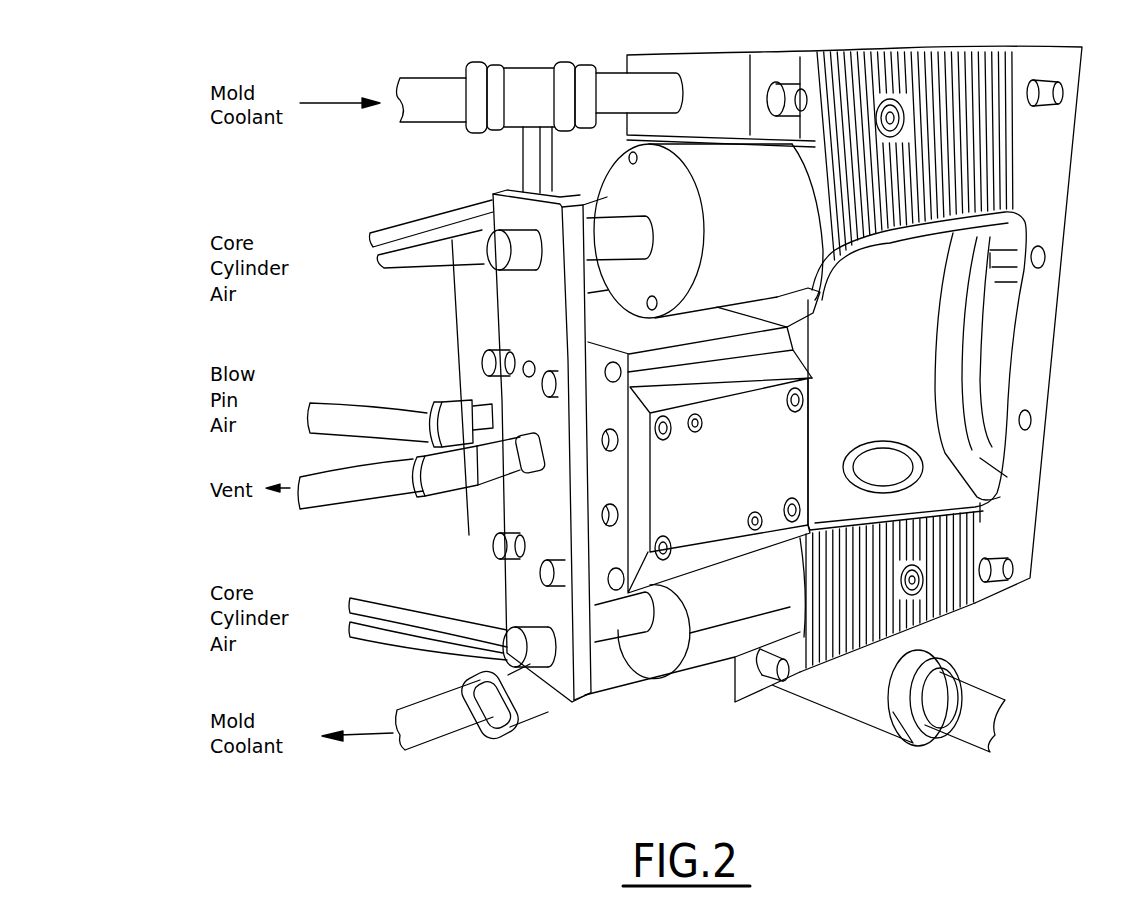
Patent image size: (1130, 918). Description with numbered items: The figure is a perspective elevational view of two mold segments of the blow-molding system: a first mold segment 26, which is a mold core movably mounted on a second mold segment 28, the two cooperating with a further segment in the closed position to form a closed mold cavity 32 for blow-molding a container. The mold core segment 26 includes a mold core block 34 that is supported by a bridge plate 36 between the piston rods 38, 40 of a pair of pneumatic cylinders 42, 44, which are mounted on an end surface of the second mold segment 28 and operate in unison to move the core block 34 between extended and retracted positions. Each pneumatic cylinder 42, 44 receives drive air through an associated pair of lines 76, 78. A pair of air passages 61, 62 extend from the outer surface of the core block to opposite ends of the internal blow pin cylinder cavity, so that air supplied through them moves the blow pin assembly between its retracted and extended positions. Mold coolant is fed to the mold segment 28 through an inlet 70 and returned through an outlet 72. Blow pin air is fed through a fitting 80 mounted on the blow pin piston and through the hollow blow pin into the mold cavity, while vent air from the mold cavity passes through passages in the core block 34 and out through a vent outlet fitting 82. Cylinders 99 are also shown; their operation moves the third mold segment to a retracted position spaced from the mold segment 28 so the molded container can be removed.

The first mold segment 26 is at (822, 375).
The second mold segment 28 is at (782, 45).
The closed mold cavity 32 is at (917, 240).
The mold core block 34 is at (600, 553).
The bridge plate 36 is at (507, 297).
The piston rod 38 is at (493, 255).
The piston rod 40 is at (605, 612).
The pneumatic cylinder 42 is at (617, 173).
The pneumatic cylinder 44 is at (668, 668).
The air passage 61 is at (587, 432).
The air passage 62 is at (590, 513).
The inlet 70 is at (533, 78).
The outlet 72 is at (540, 708).
The line 76 is at (384, 228).
The line 78 is at (400, 262).
The fitting 80 is at (445, 405).
The vent outlet fitting 82 is at (450, 483).
The cylinders 99 is at (867, 710).